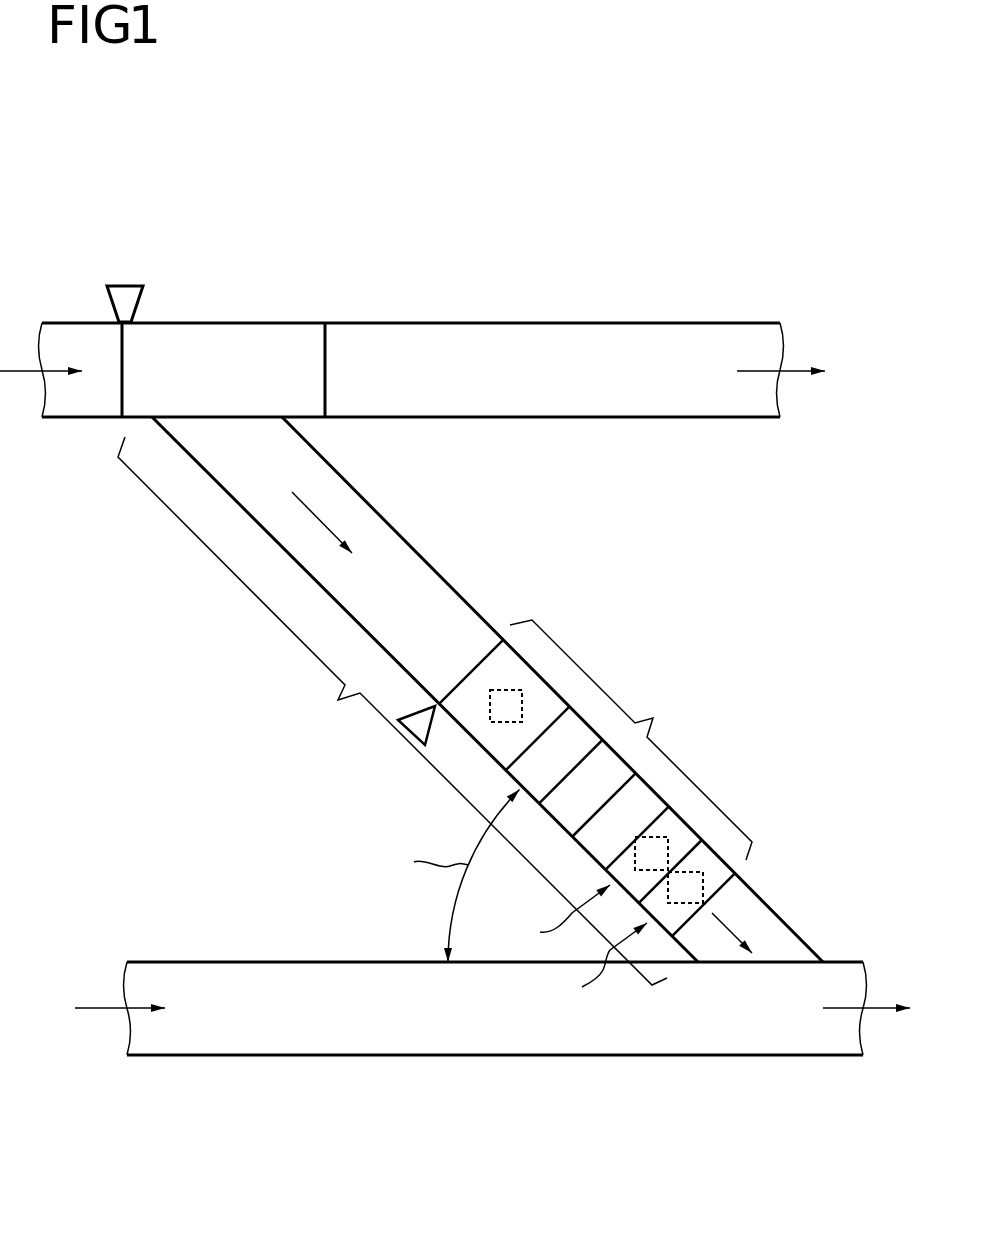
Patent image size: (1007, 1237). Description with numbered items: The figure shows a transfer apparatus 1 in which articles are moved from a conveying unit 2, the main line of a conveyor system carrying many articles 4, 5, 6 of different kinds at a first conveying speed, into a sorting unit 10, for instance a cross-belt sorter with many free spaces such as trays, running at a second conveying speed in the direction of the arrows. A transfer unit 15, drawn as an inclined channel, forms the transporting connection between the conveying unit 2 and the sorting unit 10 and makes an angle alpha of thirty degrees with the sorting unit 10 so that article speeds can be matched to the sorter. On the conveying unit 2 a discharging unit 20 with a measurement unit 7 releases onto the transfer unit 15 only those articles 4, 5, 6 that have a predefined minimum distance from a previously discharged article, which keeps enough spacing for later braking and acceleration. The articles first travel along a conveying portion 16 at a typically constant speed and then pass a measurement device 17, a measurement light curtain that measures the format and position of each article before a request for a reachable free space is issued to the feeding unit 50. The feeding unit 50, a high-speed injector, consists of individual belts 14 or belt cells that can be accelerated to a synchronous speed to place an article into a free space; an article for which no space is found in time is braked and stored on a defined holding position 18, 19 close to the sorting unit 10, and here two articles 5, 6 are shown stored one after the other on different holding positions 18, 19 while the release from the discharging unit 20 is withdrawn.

The transfer apparatus 1 is at (333, 197).
The conveying unit 2 is at (557, 322).
The discharging unit 20 is at (243, 338).
The measurement unit 7 is at (127, 286).
The sorting unit 10 is at (473, 1040).
The conveying portion 16 is at (393, 549).
The transfer unit 15 is at (392, 711).
The measurement device 17 is at (415, 727).
The feeding unit 50 is at (595, 778).
The belt 14 is at (642, 794).
The article 6 is at (517, 706).
The article 5 is at (663, 838).
The article 4 is at (746, 860).
The holding position 19 is at (558, 917).
The holding position 18 is at (595, 966).